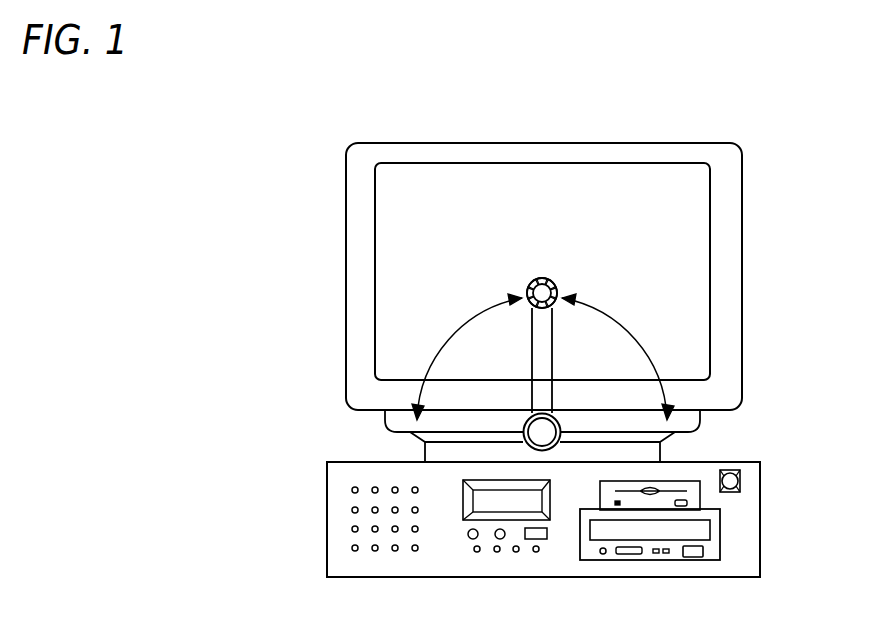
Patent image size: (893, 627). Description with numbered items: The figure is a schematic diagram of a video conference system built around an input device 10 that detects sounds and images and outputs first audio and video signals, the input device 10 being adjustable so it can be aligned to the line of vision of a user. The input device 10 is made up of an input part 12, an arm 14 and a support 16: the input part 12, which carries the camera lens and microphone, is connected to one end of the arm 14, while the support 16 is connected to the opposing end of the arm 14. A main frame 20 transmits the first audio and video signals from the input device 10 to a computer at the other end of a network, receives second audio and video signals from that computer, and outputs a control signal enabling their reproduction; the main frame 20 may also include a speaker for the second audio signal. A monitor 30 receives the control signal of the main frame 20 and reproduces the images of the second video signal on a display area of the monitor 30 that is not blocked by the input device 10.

The input device 10 is at (549, 279).
The input part 12 is at (528, 290).
The arm 14 is at (538, 372).
The support 16 is at (535, 430).
The main frame 20 is at (753, 467).
The monitor 30 is at (730, 300).